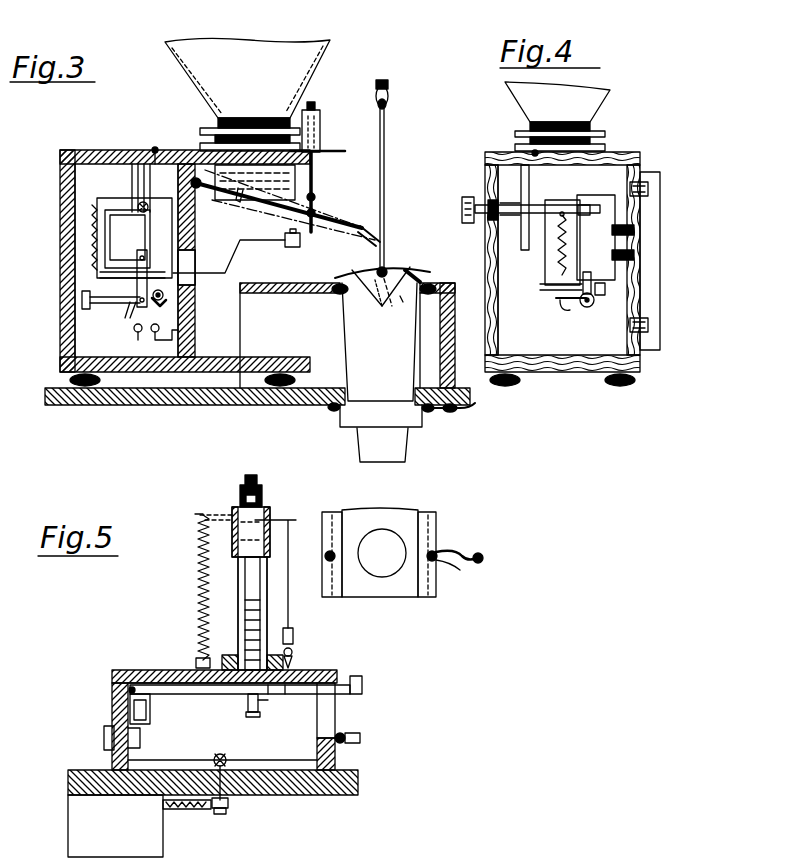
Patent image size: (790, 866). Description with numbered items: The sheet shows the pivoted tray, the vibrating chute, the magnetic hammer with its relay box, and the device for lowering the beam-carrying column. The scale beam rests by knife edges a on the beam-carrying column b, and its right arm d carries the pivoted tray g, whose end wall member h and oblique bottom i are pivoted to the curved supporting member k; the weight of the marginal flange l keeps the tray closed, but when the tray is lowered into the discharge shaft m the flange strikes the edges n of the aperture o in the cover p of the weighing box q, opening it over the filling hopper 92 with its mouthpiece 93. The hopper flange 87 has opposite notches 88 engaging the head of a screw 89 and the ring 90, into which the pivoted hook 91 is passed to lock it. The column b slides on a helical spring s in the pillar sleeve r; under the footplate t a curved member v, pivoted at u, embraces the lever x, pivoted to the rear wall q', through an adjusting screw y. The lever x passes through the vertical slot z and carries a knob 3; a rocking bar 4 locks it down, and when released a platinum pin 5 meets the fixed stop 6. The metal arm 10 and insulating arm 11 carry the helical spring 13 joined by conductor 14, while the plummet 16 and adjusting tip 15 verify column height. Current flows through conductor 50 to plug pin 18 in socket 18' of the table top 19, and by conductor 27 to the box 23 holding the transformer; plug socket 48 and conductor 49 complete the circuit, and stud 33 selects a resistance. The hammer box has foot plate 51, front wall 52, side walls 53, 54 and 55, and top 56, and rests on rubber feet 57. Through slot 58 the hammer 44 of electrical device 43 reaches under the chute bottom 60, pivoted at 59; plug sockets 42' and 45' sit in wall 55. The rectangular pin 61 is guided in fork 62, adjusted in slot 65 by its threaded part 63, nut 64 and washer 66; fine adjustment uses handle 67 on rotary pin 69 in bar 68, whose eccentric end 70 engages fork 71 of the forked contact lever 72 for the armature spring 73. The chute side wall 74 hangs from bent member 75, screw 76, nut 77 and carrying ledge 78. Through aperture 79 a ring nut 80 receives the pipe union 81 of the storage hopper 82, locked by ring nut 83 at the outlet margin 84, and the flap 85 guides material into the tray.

In FIG. 5, the knob 3 is at (362, 680).
In FIG. 5, the rocking bar 4 is at (357, 736).
In FIG. 5, the platinum pin 5 is at (286, 694).
In FIG. 5, the fixed stop 6 is at (270, 694).
In FIG. 5, the metal arm 10 is at (262, 505).
In FIG. 5, the insulating arm 11 is at (198, 516).
In FIG. 5, the helical spring 13 is at (210, 575).
In FIG. 5, the conductor 14 is at (214, 512).
In FIG. 5, the adjusting tip 15 is at (292, 656).
In FIG. 5, the plummet 16 is at (293, 636).
In FIG. 5, the plug pin 18 is at (236, 767).
In FIG. 5, the contact socket 18' is at (238, 809).
In FIG. 3, the table top 19 is at (197, 405).
In FIG. 5, the table top 19 is at (312, 796).
In FIG. 5, the box 23 is at (115, 826).
In FIG. 5, the conductor 27 is at (182, 810).
In FIG. 4, the stud 33 is at (498, 312).
In FIG. 3, the plug socket 42' is at (129, 340).
In FIG. 4, the plug socket 42' is at (605, 237).
In FIG. 3, the electrical device of the magnetic hammer 43 is at (126, 240).
In FIG. 4, the electrical device of the magnetic hammer 43 is at (546, 252).
In FIG. 3, the magnetic hammer 44 is at (262, 247).
In FIG. 3, the plug socket 45' is at (162, 340).
In FIG. 4, the plug socket 45' is at (612, 248).
In FIG. 5, the plug socket 48 is at (105, 738).
In FIG. 5, the conductor 49 is at (145, 709).
In FIG. 5, the conductor 50 is at (288, 760).
In FIG. 3, the foot plate 51 is at (252, 358).
In FIG. 4, the foot plate 51 is at (567, 372).
In FIG. 3, the front wall 52 is at (194, 326).
In FIG. 3, the side wall 53 is at (126, 260).
In FIG. 3, the box wall 54 is at (62, 240).
In FIG. 4, the box wall 54 is at (645, 170).
In FIG. 4, the right-hand side wall 55 is at (660, 272).
In FIG. 3, the box top 56 is at (118, 152).
In FIG. 4, the box top 56 is at (503, 156).
In FIG. 3, the india rubber feet 57 is at (70, 380).
In FIG. 4, the india rubber feet 57 is at (504, 386).
In FIG. 3, the slot 58 is at (190, 268).
In FIG. 3, the pivot 59 is at (200, 190).
In FIG. 3, the chute bottom 60 is at (240, 205).
In FIG. 3, the rectangular pin 61 is at (153, 213).
In FIG. 4, the rectangular pin 61 is at (510, 216).
In FIG. 3, the guide fork 62 is at (132, 176).
In FIG. 4, the guide fork 62 is at (530, 192).
In FIG. 4, the screw-threaded part 63 is at (490, 218).
In FIG. 4, the nut 64 is at (462, 210).
In FIG. 4, the slot 65 is at (497, 240).
In FIG. 4, the washer 66 is at (502, 204).
In FIG. 3, the handle 67 is at (85, 309).
In FIG. 4, the handle 67 is at (585, 308).
In FIG. 3, the bar 68 is at (128, 320).
In FIG. 4, the bar 68 is at (592, 306).
In FIG. 3, the rotary pin 69 is at (105, 305).
In FIG. 3, the eccentrically bent end 70 is at (160, 298).
In FIG. 3, the fork 71 is at (156, 308).
In FIG. 4, the fork 71 is at (594, 300).
In FIG. 4, the forked contact lever 72 is at (575, 306).
In FIG. 3, the armature spring 73 is at (130, 280).
In FIG. 4, the armature spring 73 is at (560, 292).
In FIG. 3, the chute side wall 74 is at (285, 215).
In FIG. 3, the bent member 75 is at (316, 208).
In FIG. 3, the screw 76 is at (314, 172).
In FIG. 3, the nut 77 is at (320, 132).
In FIG. 3, the carrying ledge 78 is at (328, 157).
In FIG. 3, the aperture 79 is at (156, 148).
In FIG. 3, the ring nut 80 is at (202, 148).
In FIG. 4, the ring nut 80 is at (604, 148).
In FIG. 3, the pipe union 81 is at (290, 124).
In FIG. 4, the pipe union 81 is at (590, 126).
In FIG. 3, the storage hopper 82 is at (247, 78).
In FIG. 4, the storage hopper 82 is at (557, 102).
In FIG. 3, the ring nut 83 is at (205, 130).
In FIG. 4, the ring nut 83 is at (516, 134).
In FIG. 3, the outlet margin 84 is at (270, 176).
In FIG. 3, the flap 85 is at (370, 232).
In FIG. 3, the hopper flange 87 is at (446, 414).
In FIG. 5, the hopper flange 87 is at (432, 522).
In FIG. 5, the notches 88 is at (325, 560).
In FIG. 3, the screw 89 is at (330, 410).
In FIG. 5, the screw 89 is at (325, 556).
In FIG. 3, the ring 90 is at (428, 414).
In FIG. 5, the ring 90 is at (445, 566).
In FIG. 3, the pivoted hook 91 is at (470, 408).
In FIG. 5, the pivoted hook 91 is at (455, 552).
In FIG. 3, the filling hopper 92 is at (348, 425).
In FIG. 5, the filling hopper 92 is at (368, 515).
In FIG. 3, the mouthpiece 93 is at (382, 445).
In FIG. 5, the mouthpiece 93 is at (380, 530).
In FIG. 5, the knife edges a is at (258, 484).
In FIG. 5, the beam-carrying column b is at (262, 498).
In FIG. 3, the right arm of scale beam d is at (388, 86).
In FIG. 3, the pivoted tray g is at (384, 268).
In FIG. 3, the end wall member h is at (397, 268).
In FIG. 3, the oblique bottom i is at (373, 298).
In FIG. 3, the curved supporting member k is at (385, 182).
In FIG. 3, the marginal flange l is at (418, 268).
In FIG. 3, the discharge shaft m is at (350, 325).
In FIG. 5, the discharge shaft m is at (112, 688).
In FIG. 3, the edges n is at (336, 284).
In FIG. 3, the aperture o is at (407, 295).
In FIG. 3, the cover of weighing box p is at (347, 335).
In FIG. 5, the cover of weighing box p is at (172, 670).
In FIG. 3, the weighing box q is at (446, 335).
In FIG. 4, the weighing box q is at (464, 311).
In FIG. 5, the weighing box q is at (350, 754).
In FIG. 5, the rear wall q' is at (107, 703).
In FIG. 5, the pillar sleeve r is at (233, 540).
In FIG. 5, the helical spring s is at (262, 612).
In FIG. 5, the footplate t is at (232, 656).
In FIG. 5, the pivot u is at (246, 696).
In FIG. 5, the curved member v is at (246, 714).
In FIG. 5, the lever x is at (200, 695).
In FIG. 5, the adjusting screw y is at (257, 710).
In FIG. 5, the vertical slot z is at (335, 716).